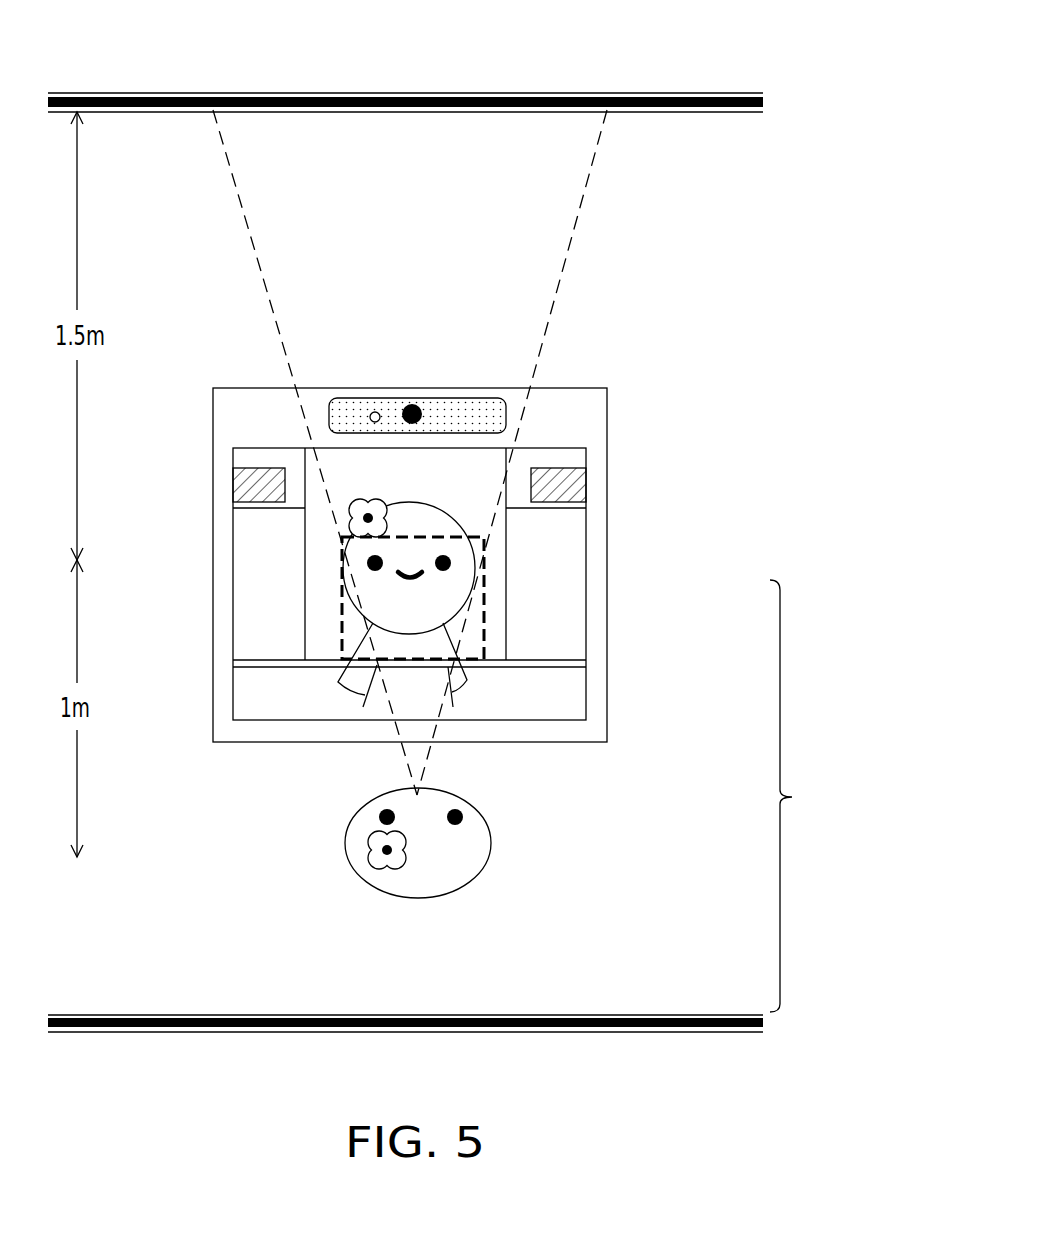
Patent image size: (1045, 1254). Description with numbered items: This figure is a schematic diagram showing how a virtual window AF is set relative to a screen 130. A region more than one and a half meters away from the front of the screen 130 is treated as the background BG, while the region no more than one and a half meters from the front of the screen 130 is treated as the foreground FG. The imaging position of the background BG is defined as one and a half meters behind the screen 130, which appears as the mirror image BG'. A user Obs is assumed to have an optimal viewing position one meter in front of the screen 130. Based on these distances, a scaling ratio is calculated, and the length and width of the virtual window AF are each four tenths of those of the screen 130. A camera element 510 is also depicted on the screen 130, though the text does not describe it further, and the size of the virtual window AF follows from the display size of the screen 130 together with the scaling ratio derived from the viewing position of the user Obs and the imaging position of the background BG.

The mirror image of the background BG' is at (405, 65).
The background BG is at (405, 1063).
The foreground FG is at (797, 796).
The screen 130 is at (586, 667).
The image capturing module 510 is at (560, 447).
The virtual window AF is at (455, 535).
The user Obs is at (491, 846).